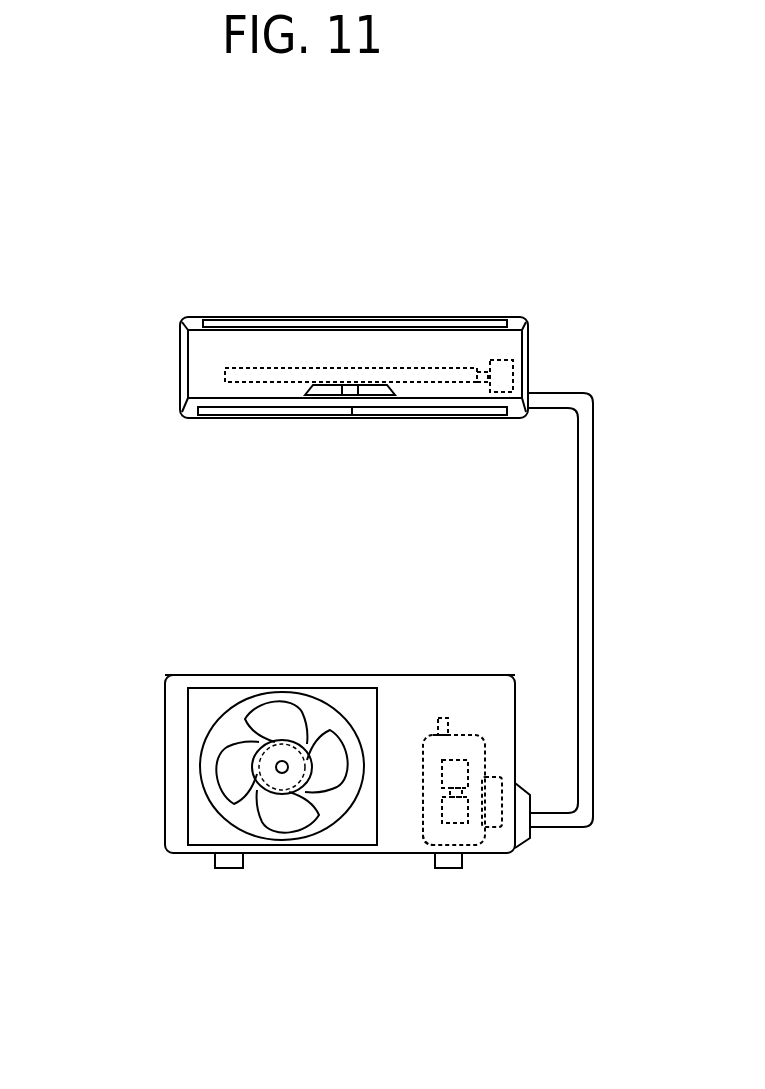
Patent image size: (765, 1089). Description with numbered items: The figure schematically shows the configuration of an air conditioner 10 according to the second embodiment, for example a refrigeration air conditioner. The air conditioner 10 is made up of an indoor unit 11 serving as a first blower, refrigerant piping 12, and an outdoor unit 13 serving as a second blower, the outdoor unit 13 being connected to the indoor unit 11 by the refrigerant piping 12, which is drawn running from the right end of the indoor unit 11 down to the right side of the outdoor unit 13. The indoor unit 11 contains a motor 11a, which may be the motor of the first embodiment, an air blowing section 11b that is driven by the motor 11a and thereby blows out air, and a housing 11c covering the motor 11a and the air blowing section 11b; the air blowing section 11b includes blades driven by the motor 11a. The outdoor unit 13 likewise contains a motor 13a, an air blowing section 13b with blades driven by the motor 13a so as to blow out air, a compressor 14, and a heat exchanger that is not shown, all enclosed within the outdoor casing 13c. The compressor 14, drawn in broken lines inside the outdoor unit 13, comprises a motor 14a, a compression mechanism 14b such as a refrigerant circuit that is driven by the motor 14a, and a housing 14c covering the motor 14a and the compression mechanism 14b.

The air conditioner 10 is at (88, 172).
The indoor unit 11 is at (235, 297).
The motor 11a is at (513, 373).
The air blowing section 11b is at (225, 374).
The housing 11c is at (345, 318).
The refrigerant piping 12 is at (593, 553).
The outdoor unit 13 is at (237, 634).
The motor 13a is at (283, 793).
The air blowing section 13b is at (188, 730).
The outdoor unit housing 13c is at (337, 675).
The compressor 14 is at (413, 744).
The motor 14a is at (455, 770).
The compression mechanism 14b is at (453, 812).
The housing 14c is at (430, 840).